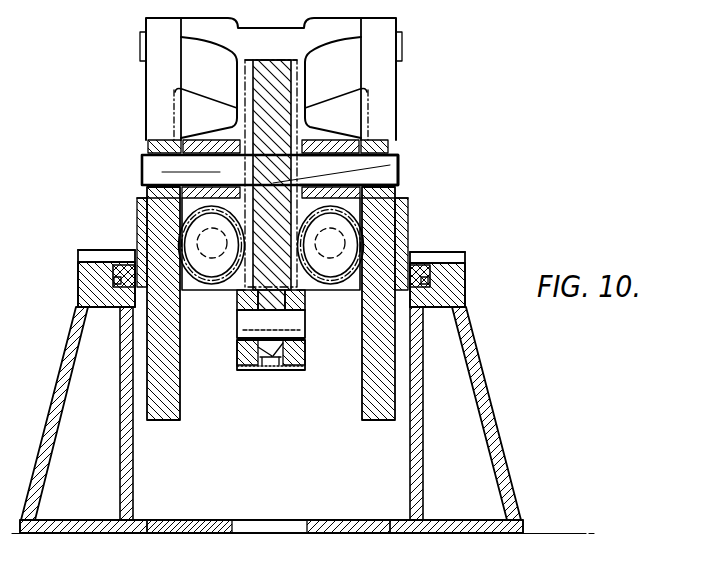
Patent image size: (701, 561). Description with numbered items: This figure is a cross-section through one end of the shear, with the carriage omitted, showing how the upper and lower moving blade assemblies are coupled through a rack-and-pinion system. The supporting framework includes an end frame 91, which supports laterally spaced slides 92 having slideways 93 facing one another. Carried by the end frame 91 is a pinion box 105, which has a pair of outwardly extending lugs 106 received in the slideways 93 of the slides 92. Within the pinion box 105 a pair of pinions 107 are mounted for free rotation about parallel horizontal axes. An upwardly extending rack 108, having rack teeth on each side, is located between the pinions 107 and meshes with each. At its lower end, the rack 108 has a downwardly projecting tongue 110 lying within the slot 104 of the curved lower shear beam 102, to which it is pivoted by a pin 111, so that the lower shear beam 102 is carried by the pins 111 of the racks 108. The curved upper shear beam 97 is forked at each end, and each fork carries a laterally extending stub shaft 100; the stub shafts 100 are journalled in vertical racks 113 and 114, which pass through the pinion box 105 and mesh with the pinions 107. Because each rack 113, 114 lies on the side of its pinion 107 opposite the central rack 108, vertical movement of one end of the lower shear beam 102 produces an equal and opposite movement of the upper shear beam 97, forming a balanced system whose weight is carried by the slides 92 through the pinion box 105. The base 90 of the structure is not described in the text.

The base stand 90 is at (303, 420).
The end frame 91 is at (470, 358).
The slide 92 is at (88, 279).
The slideway 93 is at (117, 278).
The upper shear beam 97 is at (316, 143).
The stub shaft 100 is at (163, 167).
The lower shear beam 102 is at (298, 352).
The slot 104 is at (269, 350).
The pinion box 105 is at (413, 245).
The lug 106 is at (117, 277).
The pinion 107 is at (148, 223).
The rack 108 is at (396, 166).
The tongue 110 is at (273, 352).
The pin 111 is at (295, 322).
The vertical rack 113 is at (153, 398).
The vertical rack 114 is at (385, 380).